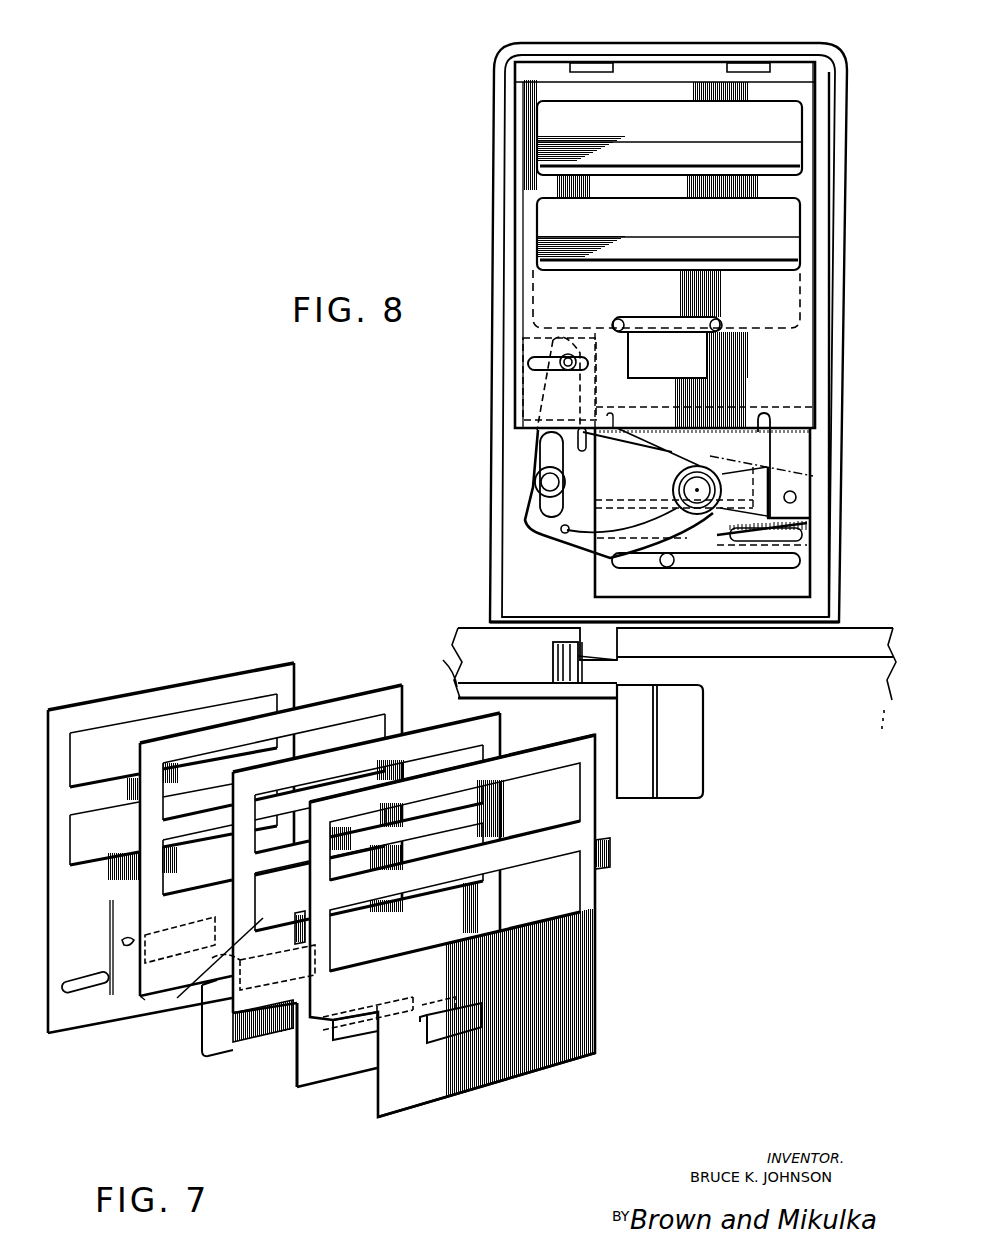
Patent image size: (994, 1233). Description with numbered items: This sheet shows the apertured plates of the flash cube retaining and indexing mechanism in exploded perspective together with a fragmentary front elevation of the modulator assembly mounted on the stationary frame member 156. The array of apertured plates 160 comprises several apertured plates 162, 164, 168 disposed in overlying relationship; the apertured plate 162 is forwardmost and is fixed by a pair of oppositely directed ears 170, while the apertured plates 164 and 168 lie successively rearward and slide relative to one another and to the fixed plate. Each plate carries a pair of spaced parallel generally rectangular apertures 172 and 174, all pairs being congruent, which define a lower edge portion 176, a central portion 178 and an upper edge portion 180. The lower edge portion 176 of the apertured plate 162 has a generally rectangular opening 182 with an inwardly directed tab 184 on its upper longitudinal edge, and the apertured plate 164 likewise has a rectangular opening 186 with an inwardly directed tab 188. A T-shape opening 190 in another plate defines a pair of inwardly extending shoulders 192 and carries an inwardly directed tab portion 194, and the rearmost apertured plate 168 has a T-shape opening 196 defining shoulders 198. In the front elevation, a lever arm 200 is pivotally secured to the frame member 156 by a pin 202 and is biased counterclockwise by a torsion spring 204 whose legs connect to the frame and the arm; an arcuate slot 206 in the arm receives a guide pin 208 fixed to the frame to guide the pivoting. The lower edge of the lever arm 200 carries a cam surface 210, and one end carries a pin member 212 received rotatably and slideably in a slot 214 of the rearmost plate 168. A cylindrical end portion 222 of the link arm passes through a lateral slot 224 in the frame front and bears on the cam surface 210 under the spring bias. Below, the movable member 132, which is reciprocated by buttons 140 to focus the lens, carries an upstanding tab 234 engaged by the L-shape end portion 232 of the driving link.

In FIG. 7, the movable member 132 is at (653, 678).
In FIG. 7, the buttons 140 is at (703, 728).
In FIG. 8, the stationary frame member 156 is at (494, 133).
In FIG. 7, the array of apertured plates 160 is at (607, 1037).
In FIG. 8, the apertured plate 162 is at (785, 302).
In FIG. 7, the apertured plate 162 is at (578, 997).
In FIG. 7, the apertured plate 164 is at (307, 1070).
In FIG. 7, the apertured plate 168 is at (119, 1005).
In FIG. 7, the ears 170 is at (611, 856).
In FIG. 8, the aperture 172 is at (790, 212).
In FIG. 7, the aperture 172 is at (72, 868).
In FIG. 8, the aperture 174 is at (790, 108).
In FIG. 7, the aperture 174 is at (272, 698).
In FIG. 7, the lower edge portion 176 is at (67, 1017).
In FIG. 7, the central portion 178 is at (88, 805).
In FIG. 8, the upper edge portion 180 is at (647, 85).
In FIG. 7, the upper edge portion 180 is at (462, 803).
In FIG. 7, the rectangular opening 182 is at (452, 1027).
In FIG. 7, the tab 184 is at (447, 1006).
In FIG. 7, the rectangular opening 186 is at (360, 1037).
In FIG. 7, the tab 188 is at (378, 1000).
In FIG. 7, the T-shape opening 190 is at (218, 1053).
In FIG. 7, the shoulders 192 is at (228, 977).
In FIG. 8, the tab portion 194 is at (668, 338).
In FIG. 7, the tab portion 194 is at (200, 1010).
In FIG. 8, the T-shape opening 196 is at (690, 357).
In FIG. 7, the T-shape opening 196 is at (122, 938).
In FIG. 8, the shoulders 198 is at (612, 322).
In FIG. 7, the shoulders 198 is at (180, 940).
In FIG. 8, the lever arm 200 is at (637, 481).
In FIG. 8, the pin 202 is at (797, 492).
In FIG. 8, the torsion spring 204 is at (675, 445).
In FIG. 8, the arcuate slot 206 is at (540, 455).
In FIG. 8, the guide pin 208 is at (540, 492).
In FIG. 8, the cam surface 210 is at (760, 547).
In FIG. 8, the pin member 212 is at (565, 368).
In FIG. 8, the slot 214 is at (530, 360).
In FIG. 7, the slot 214 is at (90, 990).
In FIG. 8, the cylindrical end portion 222 is at (668, 567).
In FIG. 8, the slot 224 is at (795, 565).
In FIG. 7, the L-shape end portion 232 is at (612, 646).
In FIG. 7, the tab 234 is at (560, 667).